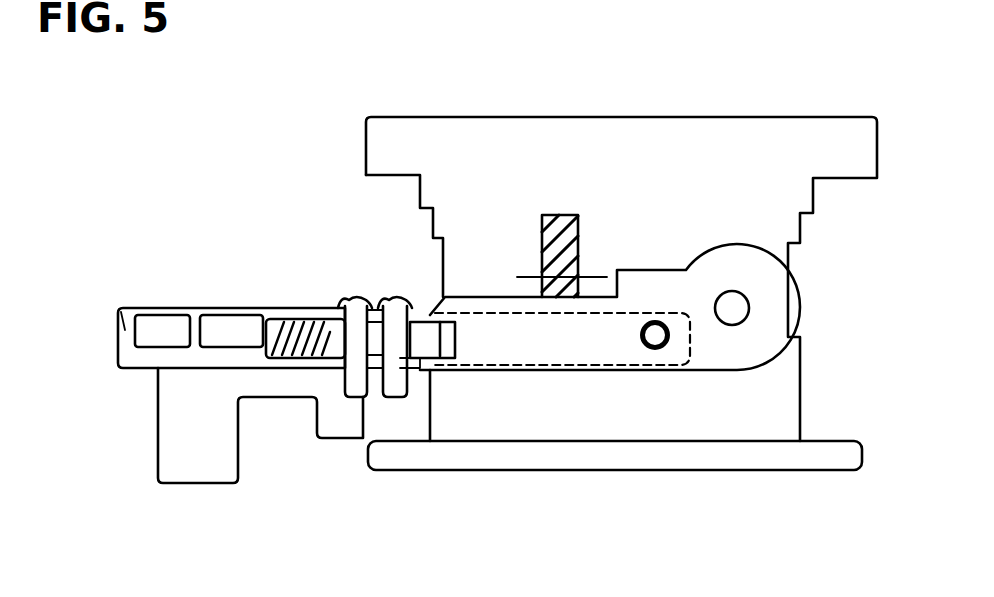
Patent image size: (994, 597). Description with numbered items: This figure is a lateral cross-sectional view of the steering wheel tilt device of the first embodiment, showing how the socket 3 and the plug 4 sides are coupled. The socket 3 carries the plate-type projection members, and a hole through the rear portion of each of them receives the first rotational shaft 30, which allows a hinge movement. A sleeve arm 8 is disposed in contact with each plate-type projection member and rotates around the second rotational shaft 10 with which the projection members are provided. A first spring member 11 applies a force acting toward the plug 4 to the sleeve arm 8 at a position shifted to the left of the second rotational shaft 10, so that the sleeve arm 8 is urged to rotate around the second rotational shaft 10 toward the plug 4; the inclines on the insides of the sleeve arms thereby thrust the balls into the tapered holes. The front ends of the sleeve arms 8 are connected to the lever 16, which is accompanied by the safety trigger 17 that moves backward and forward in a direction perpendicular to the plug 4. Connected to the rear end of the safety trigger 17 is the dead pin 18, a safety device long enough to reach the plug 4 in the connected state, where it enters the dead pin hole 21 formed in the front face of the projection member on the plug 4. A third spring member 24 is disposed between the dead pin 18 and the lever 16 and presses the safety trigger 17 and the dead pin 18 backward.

The socket 3 is at (720, 136).
The plug 4 is at (732, 460).
The sleeve arm 8 is at (498, 330).
The second rotational shaft 10 is at (655, 335).
The first spring member 11 is at (557, 215).
The lever 16 is at (122, 308).
The safety trigger 17 is at (191, 443).
The dead pin 18 is at (427, 340).
The dead pin hole 21 is at (458, 347).
The third spring member 24 is at (283, 318).
The first rotational shaft 30 is at (732, 308).